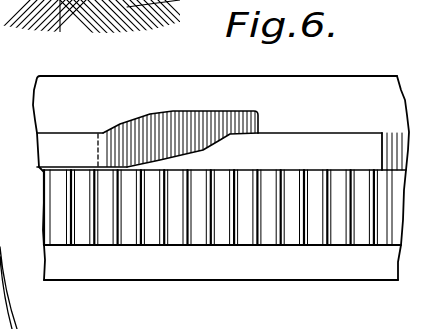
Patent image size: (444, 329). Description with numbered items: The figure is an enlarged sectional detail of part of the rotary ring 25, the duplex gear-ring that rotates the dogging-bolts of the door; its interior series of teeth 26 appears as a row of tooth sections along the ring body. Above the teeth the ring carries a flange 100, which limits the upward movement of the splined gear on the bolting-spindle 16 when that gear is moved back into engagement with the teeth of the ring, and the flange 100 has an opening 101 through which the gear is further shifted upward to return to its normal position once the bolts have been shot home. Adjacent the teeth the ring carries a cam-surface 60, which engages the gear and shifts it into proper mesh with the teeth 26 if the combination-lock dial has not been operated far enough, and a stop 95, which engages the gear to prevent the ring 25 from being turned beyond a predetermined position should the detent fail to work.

The rotatable member 25 is at (322, 268).
The series of teeth 26 is at (67, 197).
The cam-surface 60 is at (197, 145).
The stop 95 is at (152, 122).
The flange 100 is at (82, 150).
The opening 101 is at (310, 148).
The bolting-spindle 16 is at (18, 7).